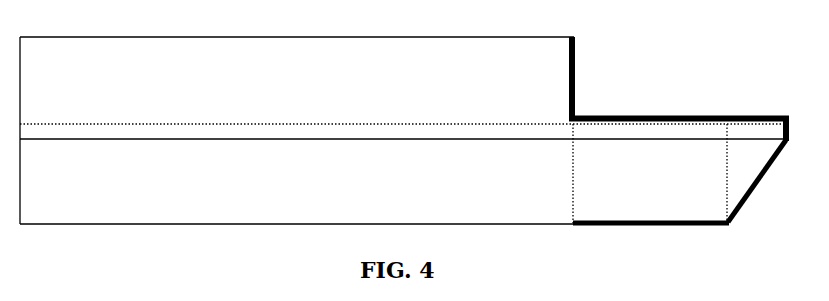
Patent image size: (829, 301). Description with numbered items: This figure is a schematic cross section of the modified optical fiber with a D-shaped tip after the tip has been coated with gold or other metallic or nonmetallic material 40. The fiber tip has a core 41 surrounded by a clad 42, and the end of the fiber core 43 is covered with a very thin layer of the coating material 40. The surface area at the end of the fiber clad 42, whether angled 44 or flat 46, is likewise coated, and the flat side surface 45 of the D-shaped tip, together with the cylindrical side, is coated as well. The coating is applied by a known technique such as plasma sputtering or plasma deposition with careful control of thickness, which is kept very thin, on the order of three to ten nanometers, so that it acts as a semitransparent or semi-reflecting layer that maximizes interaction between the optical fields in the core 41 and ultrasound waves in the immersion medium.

The gold or other metallic or nonmetallic coating material 40 is at (297, 116).
The core 41 is at (402, 127).
The clad 42 is at (297, 62).
The end of the fiber core 43 is at (798, 123).
The angled end surface of the fiber clad 44 is at (682, 173).
The flat side surface 45 is at (679, 102).
The flat end surface of the fiber clad 46 is at (588, 79).